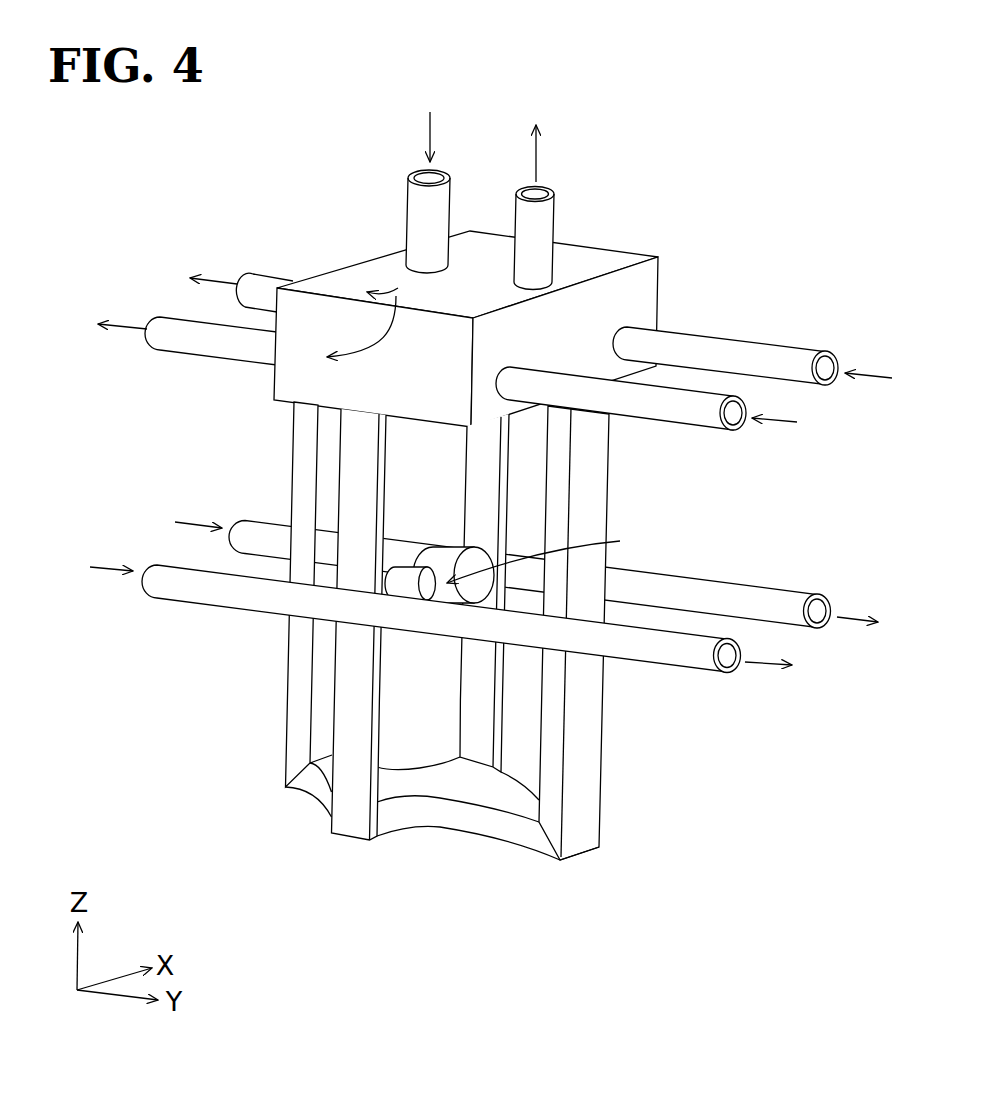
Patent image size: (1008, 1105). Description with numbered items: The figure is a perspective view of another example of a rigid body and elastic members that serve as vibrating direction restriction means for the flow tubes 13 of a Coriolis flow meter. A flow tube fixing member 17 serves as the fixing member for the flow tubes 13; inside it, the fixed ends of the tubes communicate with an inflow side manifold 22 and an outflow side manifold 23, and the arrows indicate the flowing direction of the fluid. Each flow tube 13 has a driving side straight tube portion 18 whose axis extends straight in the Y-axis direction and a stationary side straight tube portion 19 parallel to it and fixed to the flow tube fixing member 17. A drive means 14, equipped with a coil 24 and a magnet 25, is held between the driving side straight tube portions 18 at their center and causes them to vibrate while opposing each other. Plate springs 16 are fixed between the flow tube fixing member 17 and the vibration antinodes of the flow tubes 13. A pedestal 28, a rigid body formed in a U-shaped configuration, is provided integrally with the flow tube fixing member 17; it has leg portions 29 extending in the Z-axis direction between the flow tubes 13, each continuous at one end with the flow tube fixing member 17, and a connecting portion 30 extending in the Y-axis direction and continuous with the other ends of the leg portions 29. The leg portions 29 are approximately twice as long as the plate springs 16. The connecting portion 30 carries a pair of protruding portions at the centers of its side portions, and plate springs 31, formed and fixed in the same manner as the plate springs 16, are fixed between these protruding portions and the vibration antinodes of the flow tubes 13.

The flow tube 13 is at (178, 607).
The drive means 14 is at (620, 541).
The plate spring 16 is at (355, 470).
The flow tube fixing member 17 is at (620, 260).
The driving side straight tube portion 18 is at (640, 653).
The stationary side straight tube portion 19 is at (745, 347).
The inflow side manifold 22 is at (407, 218).
The outflow side manifold 23 is at (555, 212).
The coil 24 is at (475, 560).
The magnet 25 is at (415, 600).
The pedestal 28 is at (451, 660).
The leg portion 29 is at (302, 673).
The connecting portion 30 is at (493, 793).
The plate spring 31 is at (352, 707).